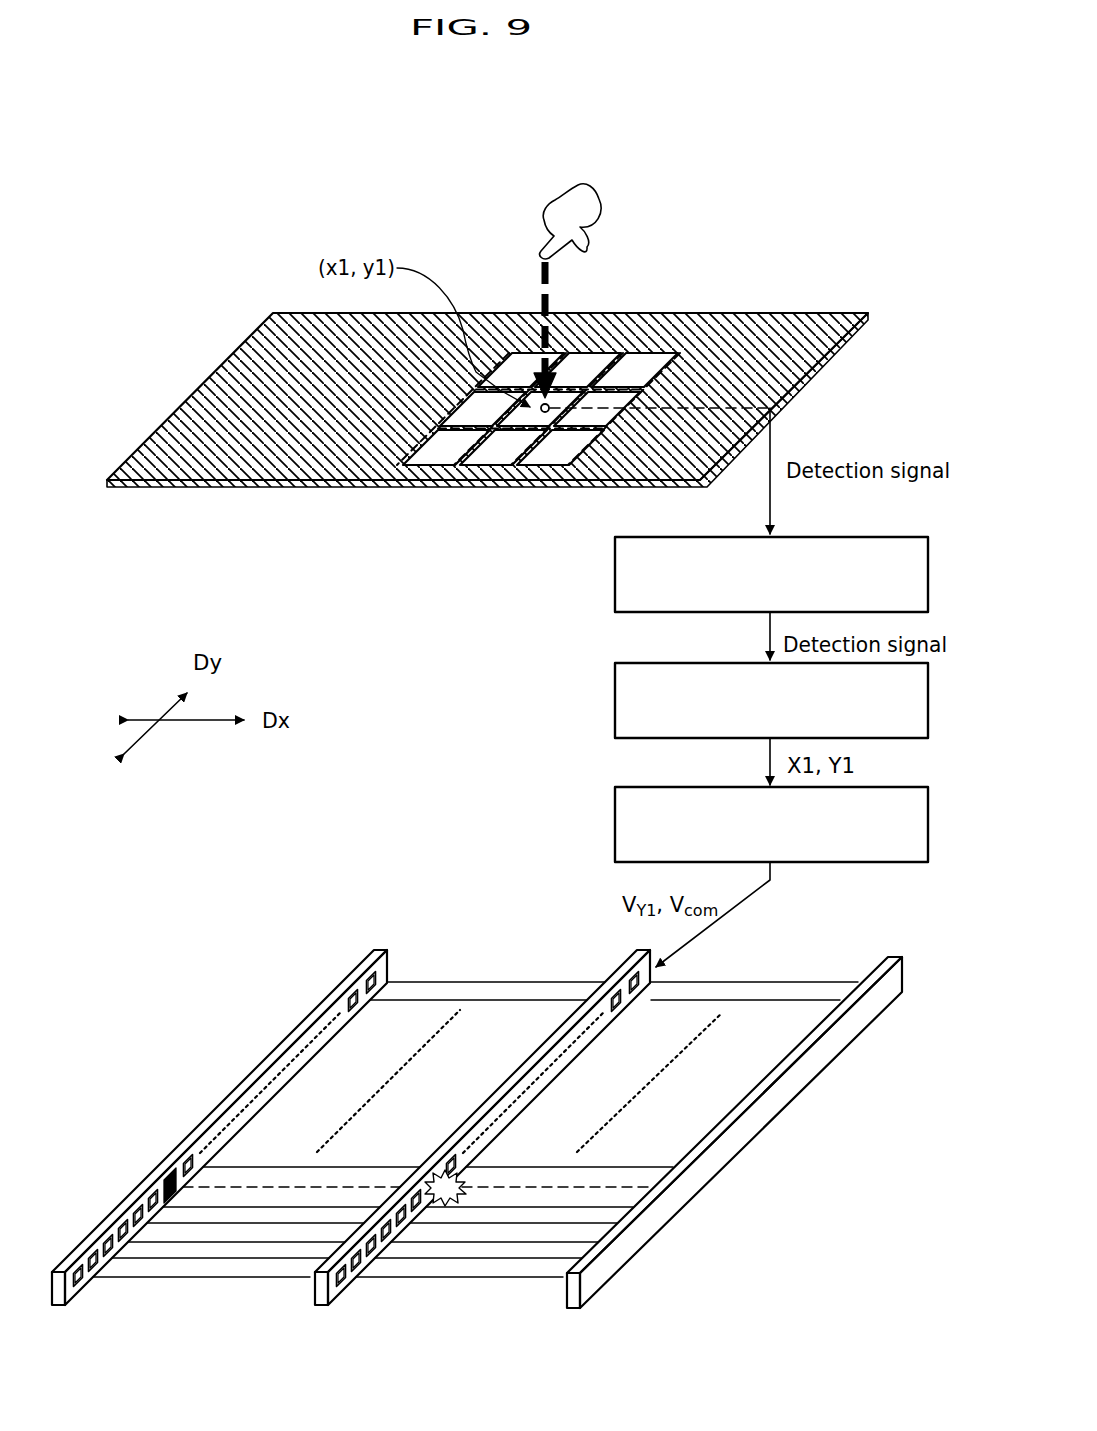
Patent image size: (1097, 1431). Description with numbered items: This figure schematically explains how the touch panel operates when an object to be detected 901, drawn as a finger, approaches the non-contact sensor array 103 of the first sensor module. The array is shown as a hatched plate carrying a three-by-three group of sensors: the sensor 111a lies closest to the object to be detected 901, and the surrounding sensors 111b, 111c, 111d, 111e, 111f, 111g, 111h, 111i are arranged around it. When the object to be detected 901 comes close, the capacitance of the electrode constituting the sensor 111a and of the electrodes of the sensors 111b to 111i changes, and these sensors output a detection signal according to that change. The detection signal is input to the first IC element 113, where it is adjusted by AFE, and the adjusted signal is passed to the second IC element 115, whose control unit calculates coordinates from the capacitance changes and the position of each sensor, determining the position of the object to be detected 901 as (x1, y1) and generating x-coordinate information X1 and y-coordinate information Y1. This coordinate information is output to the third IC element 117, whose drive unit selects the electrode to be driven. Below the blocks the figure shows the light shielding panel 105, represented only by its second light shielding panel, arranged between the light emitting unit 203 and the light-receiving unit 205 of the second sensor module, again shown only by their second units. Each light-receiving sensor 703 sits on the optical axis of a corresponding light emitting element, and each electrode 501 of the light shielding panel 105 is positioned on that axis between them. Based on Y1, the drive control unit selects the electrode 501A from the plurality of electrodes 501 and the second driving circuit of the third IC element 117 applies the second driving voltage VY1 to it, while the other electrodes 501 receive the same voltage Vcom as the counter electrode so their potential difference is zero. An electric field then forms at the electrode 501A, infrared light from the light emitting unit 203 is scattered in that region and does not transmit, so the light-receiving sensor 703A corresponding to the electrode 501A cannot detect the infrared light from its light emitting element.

The non-contact sensor array 103 is at (805, 378).
The sensor 111a is at (598, 390).
The sensor 111b is at (680, 352).
The sensor 111c is at (652, 405).
The sensor 111d is at (573, 458).
The sensor 111e is at (503, 458).
The sensor 111f is at (436, 458).
The sensor 111g is at (440, 428).
The sensor 111h is at (510, 352).
The sensor 111i is at (573, 357).
The object to be detected 901 is at (592, 184).
The first IC element 113 is at (614, 571).
The second IC element 115 is at (614, 697).
The third IC element 117 is at (614, 821).
The light shielding panel 105 is at (482, 1129).
The light-receiving unit 205 is at (219, 1141).
The light emitting unit 203 is at (762, 1118).
The light-receiving sensor 703 is at (82, 1280).
The light-receiving sensor 703A is at (164, 1174).
The electrode 501 is at (345, 1280).
The electrode 501A is at (430, 1177).